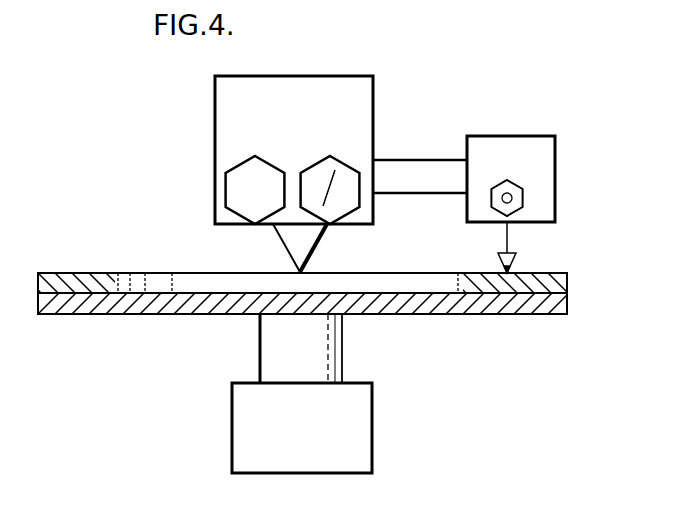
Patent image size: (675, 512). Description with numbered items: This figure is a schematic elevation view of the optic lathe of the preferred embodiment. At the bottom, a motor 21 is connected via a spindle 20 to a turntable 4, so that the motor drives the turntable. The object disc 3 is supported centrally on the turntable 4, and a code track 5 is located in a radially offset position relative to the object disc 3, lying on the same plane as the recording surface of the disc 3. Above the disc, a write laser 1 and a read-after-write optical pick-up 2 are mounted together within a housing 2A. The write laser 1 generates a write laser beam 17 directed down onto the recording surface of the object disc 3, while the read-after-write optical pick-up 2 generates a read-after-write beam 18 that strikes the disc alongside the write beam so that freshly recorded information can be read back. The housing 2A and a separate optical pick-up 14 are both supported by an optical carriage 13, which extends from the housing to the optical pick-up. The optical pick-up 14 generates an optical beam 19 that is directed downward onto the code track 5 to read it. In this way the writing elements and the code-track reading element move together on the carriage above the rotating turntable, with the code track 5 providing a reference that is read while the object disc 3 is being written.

The write laser 1 is at (267, 157).
The read-after-write optical pick-up 2 is at (350, 162).
The housing 2A is at (312, 76).
The object disc 3 is at (136, 266).
The turntable 4 is at (548, 316).
The code track 5 is at (546, 269).
The optical carriage 13 is at (429, 161).
The optical pick-up 14 is at (522, 197).
The write laser beam 17 is at (287, 250).
The read-after-write beam 18 is at (312, 250).
The optical beam 19 is at (500, 262).
The spindle 20 is at (332, 343).
The motor 21 is at (353, 448).